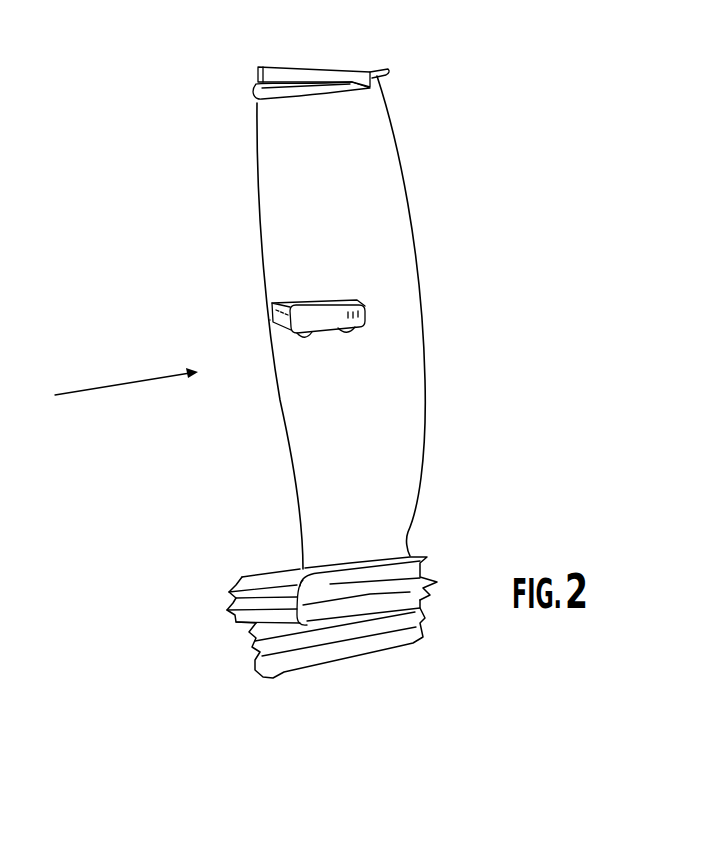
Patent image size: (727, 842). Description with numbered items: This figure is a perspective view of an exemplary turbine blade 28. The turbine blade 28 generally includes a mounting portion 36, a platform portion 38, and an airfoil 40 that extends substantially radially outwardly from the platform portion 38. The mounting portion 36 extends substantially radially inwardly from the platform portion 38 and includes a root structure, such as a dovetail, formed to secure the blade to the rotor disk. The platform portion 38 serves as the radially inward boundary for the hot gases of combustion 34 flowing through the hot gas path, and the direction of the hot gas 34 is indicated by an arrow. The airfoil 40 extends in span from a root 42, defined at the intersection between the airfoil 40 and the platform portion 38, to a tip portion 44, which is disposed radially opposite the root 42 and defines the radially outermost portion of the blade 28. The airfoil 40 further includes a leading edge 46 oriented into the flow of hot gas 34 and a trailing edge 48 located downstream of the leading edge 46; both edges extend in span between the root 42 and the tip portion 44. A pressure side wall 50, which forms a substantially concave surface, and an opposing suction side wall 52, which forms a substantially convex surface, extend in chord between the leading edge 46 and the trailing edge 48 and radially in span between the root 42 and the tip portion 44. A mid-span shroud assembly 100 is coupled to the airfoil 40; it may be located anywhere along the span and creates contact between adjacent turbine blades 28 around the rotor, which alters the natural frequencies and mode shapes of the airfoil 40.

The turbine blade 28 is at (490, 148).
The hot gases of combustion 34 is at (105, 383).
The mounting portion 36 is at (224, 649).
The platform portion 38 is at (246, 568).
The airfoil 40 is at (397, 412).
The root 42 is at (368, 560).
The tip portion 44 is at (303, 52).
The leading edge 46 is at (274, 380).
The trailing edge 48 is at (434, 266).
The pressure side wall 50 is at (329, 421).
The suction side wall 52 is at (254, 85).
The mid-span shroud assembly 100 is at (283, 281).